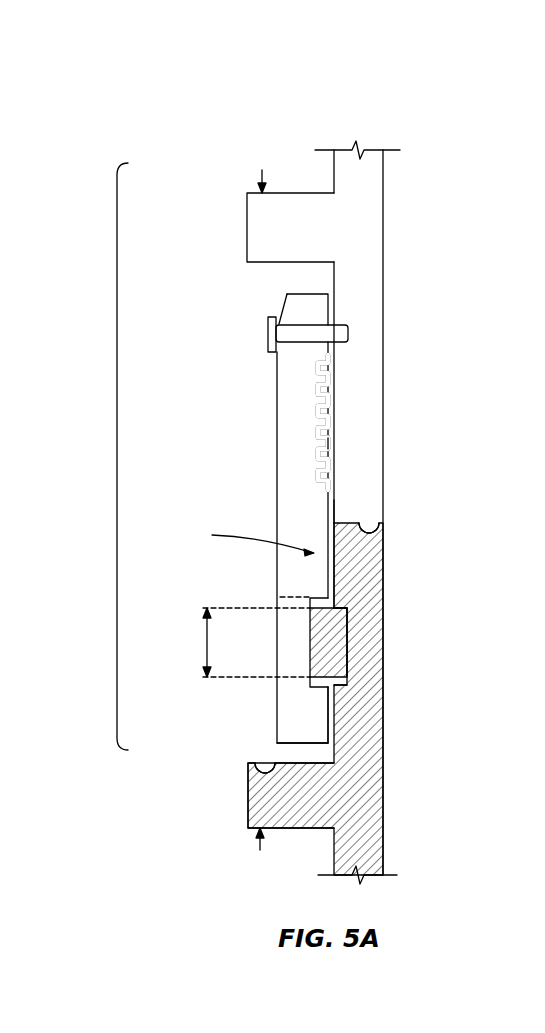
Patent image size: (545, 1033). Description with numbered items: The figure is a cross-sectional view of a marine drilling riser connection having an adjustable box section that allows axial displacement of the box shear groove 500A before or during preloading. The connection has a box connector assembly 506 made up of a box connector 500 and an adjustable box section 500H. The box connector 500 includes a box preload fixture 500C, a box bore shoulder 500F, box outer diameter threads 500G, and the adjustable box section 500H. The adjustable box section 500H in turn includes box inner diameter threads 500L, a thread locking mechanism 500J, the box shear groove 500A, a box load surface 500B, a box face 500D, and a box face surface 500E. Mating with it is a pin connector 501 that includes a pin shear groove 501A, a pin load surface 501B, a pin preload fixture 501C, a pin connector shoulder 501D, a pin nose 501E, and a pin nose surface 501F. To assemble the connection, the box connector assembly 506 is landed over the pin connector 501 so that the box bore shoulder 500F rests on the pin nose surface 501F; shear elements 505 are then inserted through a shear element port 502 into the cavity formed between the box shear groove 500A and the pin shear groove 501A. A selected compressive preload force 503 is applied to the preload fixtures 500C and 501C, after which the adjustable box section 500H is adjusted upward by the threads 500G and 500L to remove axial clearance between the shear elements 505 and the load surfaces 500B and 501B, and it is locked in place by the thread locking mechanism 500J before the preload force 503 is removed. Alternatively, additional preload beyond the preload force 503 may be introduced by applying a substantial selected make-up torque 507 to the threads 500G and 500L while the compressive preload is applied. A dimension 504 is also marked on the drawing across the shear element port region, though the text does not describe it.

The box connector 500 is at (380, 226).
The box shear groove 500A is at (322, 597).
The box load surface 500B is at (320, 683).
The box preload fixture 500C is at (257, 229).
The box face 500D is at (298, 707).
The box face surface 500E is at (293, 743).
The box bore shoulder 500F is at (343, 522).
The box outer diameter threads 500G is at (322, 405).
The adjustable box section 500H is at (285, 401).
The thread locking mechanism 500J is at (268, 338).
The box inner diameter threads 500L is at (318, 441).
The pin connector 501 is at (365, 808).
The pin shear groove 501A is at (340, 688).
The pin load surface 501B is at (346, 607).
The pin preload fixture 501C is at (265, 797).
The pin connector shoulder 501D is at (262, 775).
The pin nose 501E is at (360, 572).
The pin nose surface 501F is at (373, 531).
The shear element port 502 is at (308, 640).
The compressive preload force 503 is at (262, 170).
The seal height 504 is at (205, 640).
The shear elements 505 is at (342, 653).
The box connector assembly 506 is at (117, 459).
The make-up torque 507 is at (250, 535).